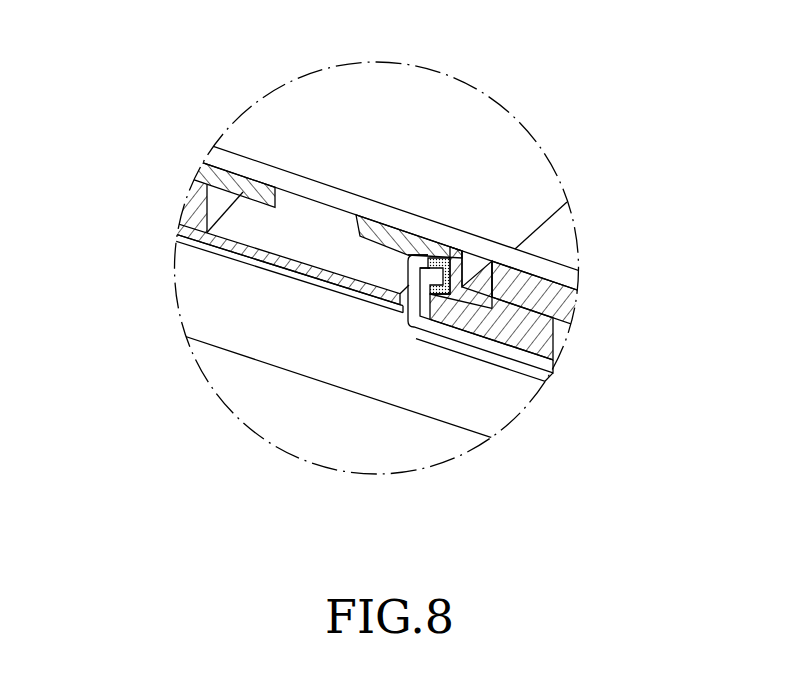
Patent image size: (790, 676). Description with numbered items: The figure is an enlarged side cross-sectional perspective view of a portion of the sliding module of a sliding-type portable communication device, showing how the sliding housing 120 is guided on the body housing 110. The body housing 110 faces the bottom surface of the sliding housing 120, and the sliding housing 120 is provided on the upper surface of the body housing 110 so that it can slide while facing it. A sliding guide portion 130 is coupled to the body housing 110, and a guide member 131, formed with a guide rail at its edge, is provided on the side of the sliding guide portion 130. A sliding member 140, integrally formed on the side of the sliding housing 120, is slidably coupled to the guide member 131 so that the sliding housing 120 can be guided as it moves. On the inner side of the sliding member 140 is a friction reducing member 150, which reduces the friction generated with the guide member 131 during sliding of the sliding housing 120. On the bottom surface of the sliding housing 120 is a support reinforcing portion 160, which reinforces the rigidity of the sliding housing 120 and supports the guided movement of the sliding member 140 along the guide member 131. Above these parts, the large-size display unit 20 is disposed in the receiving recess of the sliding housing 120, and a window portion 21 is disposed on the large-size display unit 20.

The window portion 21 is at (430, 117).
The large-size display unit 20 is at (553, 305).
The support reinforcing portion 160 is at (195, 215).
The body housing 110 is at (198, 299).
The sliding housing 120 is at (542, 340).
The friction reducing member 150 is at (445, 258).
The sliding member 140 is at (477, 300).
The sliding guide portion 130 is at (435, 333).
The guide member 131 is at (430, 268).